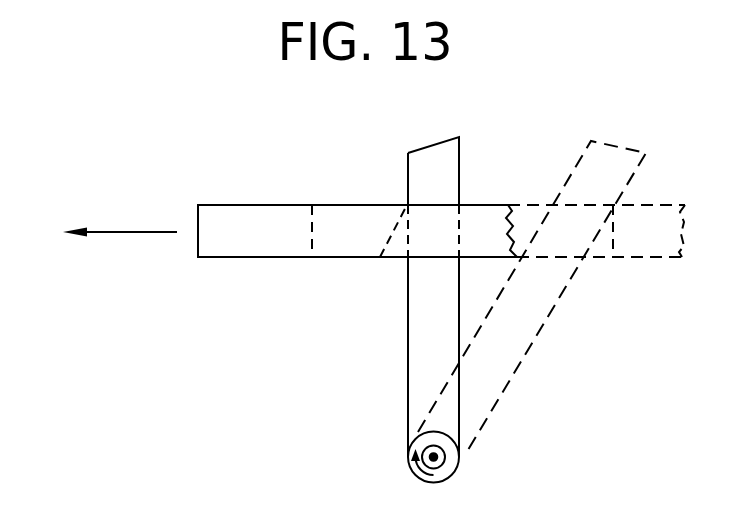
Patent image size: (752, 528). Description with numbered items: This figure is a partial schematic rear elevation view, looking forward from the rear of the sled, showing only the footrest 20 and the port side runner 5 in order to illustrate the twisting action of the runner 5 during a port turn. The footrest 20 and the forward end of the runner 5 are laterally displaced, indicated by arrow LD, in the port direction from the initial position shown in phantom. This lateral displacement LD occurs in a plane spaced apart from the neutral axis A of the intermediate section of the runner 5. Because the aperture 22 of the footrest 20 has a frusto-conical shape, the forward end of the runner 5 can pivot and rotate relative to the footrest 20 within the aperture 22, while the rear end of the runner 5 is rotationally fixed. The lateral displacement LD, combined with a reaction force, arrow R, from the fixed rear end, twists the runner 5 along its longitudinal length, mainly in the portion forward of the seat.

The runner 5 is at (407, 171).
The footrest 20 is at (483, 205).
The aperture 22 is at (390, 233).
The neutral axis A is at (437, 458).
The reaction force R is at (430, 476).
The lateral displacement LD is at (101, 233).